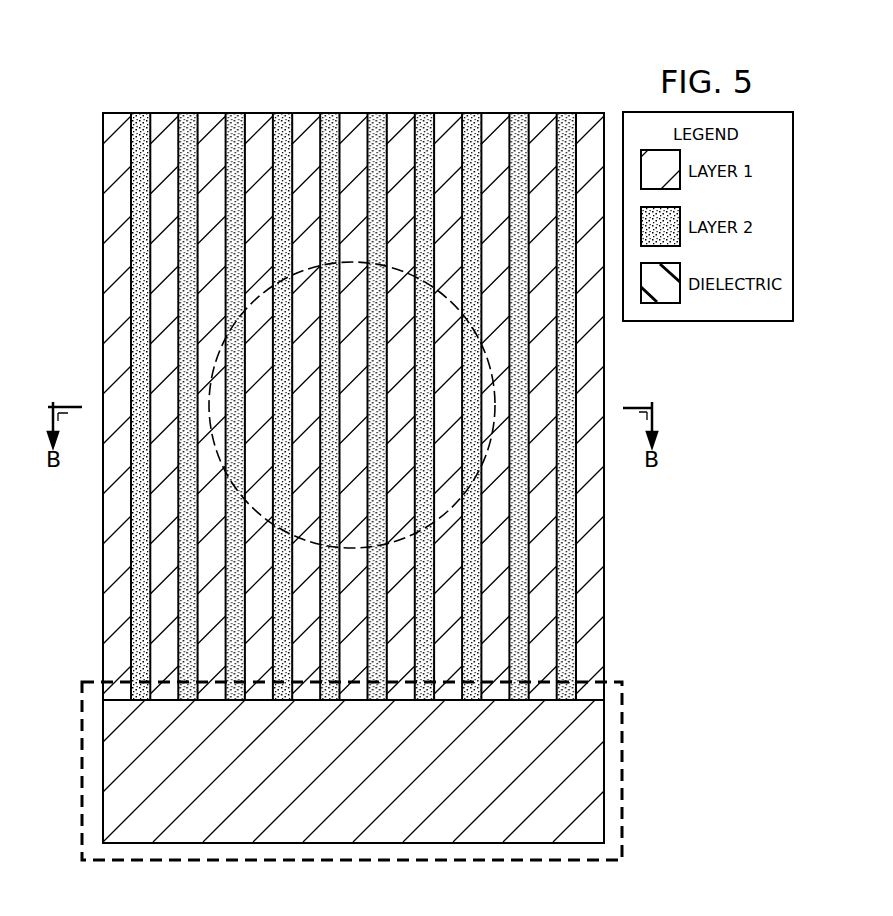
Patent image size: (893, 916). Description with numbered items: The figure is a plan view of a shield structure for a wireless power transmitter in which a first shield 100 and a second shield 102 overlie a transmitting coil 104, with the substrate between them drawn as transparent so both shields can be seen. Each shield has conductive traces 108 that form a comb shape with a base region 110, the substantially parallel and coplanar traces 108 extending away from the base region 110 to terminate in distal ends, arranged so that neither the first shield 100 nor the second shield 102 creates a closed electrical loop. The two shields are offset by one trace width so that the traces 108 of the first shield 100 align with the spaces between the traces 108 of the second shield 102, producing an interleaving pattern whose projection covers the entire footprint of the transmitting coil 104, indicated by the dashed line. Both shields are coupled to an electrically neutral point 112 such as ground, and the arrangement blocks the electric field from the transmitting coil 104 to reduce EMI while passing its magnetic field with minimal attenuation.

The first shield 100 is at (604, 562).
The second shield 102 is at (113, 118).
The transmitting coil 104 is at (494, 372).
The traces 108 is at (108, 170).
The base region 110 is at (624, 782).
The electrically neutral point 112 is at (102, 776).